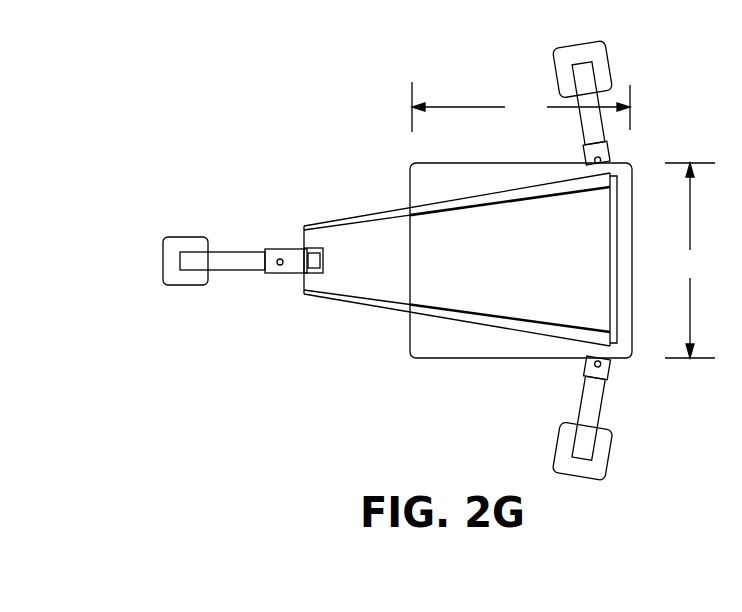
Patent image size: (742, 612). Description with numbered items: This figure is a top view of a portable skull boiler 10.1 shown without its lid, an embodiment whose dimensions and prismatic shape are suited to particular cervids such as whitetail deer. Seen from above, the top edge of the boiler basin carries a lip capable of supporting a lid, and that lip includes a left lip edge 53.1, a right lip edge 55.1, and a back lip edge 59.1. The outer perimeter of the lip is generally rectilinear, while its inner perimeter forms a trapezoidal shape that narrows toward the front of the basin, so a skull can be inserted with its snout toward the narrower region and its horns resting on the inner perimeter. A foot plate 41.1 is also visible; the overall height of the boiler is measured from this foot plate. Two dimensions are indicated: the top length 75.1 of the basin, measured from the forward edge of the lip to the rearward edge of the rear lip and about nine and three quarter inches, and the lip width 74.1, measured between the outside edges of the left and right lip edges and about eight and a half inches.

The portable skull boiler 10.1 is at (439, 260).
The foot plate 41.1 is at (182, 238).
The left lip edge 53.1 is at (445, 360).
The right lip edge 55.1 is at (410, 193).
The back lip edge 59.1 is at (633, 188).
The width 74.1 is at (690, 260).
The top length 75.1 is at (521, 107).